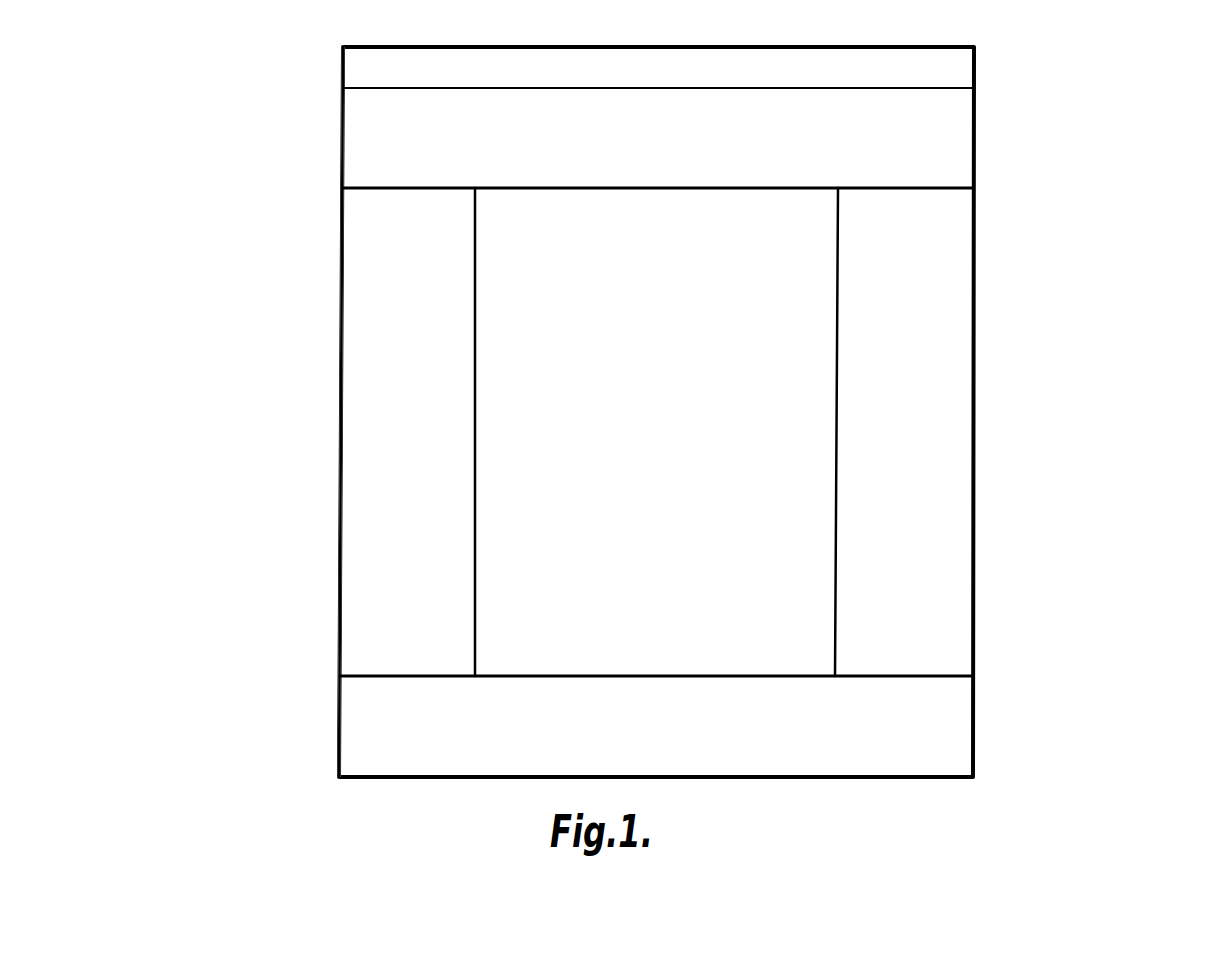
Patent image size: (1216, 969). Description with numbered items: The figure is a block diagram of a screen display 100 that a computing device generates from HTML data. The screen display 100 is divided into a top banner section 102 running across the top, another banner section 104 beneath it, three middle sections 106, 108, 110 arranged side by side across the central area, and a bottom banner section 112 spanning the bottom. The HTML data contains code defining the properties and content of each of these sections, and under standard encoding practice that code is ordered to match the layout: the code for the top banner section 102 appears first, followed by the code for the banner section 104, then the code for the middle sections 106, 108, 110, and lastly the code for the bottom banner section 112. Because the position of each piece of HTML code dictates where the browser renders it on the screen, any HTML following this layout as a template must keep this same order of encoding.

The screen display 100 is at (1016, 88).
The top banner section 102 is at (358, 64).
The banner section 104 is at (370, 152).
The middle section 106 is at (397, 294).
The middle section 108 is at (505, 514).
The middle section 110 is at (889, 291).
The bottom banner section 112 is at (378, 705).